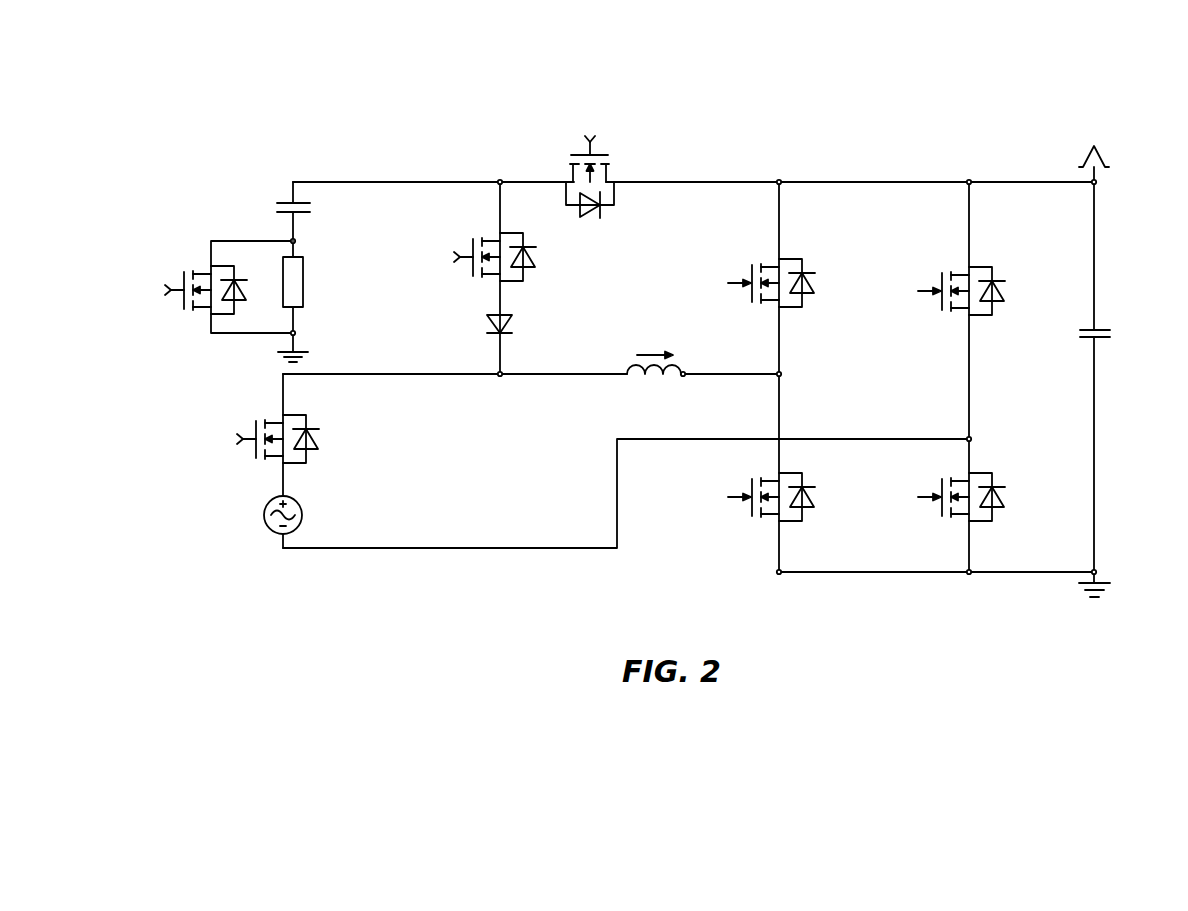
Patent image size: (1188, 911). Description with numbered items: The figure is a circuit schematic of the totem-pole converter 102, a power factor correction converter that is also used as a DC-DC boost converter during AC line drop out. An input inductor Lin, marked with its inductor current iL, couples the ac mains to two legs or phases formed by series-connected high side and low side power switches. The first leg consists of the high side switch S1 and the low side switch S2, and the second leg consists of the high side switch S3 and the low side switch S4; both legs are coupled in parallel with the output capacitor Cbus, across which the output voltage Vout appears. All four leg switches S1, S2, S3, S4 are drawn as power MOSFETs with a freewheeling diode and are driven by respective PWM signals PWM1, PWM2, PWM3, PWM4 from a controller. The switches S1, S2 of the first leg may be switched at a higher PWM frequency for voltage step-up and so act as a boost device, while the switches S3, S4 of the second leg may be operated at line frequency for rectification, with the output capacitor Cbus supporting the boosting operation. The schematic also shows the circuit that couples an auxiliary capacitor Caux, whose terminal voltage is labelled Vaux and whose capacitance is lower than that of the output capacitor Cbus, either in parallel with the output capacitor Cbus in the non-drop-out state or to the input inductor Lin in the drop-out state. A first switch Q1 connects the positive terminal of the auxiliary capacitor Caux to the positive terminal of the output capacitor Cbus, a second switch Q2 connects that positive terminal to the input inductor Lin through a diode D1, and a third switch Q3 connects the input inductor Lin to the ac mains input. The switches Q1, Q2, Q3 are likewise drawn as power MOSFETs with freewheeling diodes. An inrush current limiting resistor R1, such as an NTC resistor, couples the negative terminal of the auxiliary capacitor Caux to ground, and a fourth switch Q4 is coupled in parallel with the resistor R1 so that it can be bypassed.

The totem-pole converter 102 is at (188, 41).
The first switch Q1 is at (601, 177).
The second switch Q2 is at (495, 247).
The third switch Q3 is at (278, 427).
The fourth switch Q4 is at (201, 275).
The high side switch S1 is at (780, 271).
The low side switch S2 is at (780, 486).
The high side switch S3 is at (970, 276).
The low side switch S4 is at (970, 486).
The diode D1 is at (513, 324).
The inrush current limiting resistor R1 is at (307, 282).
The auxiliary capacitor Caux is at (319, 201).
The output capacitor Cbus is at (1119, 328).
The input inductor Lin is at (654, 380).
The inductor current iL is at (655, 346).
The auxiliary voltage Vaux is at (249, 212).
The output voltage Vout is at (1099, 142).
The PWM signal PWM1 is at (708, 285).
The PWM signal PWM2 is at (708, 499).
The PWM signal PWM3 is at (898, 293).
The PWM signal PWM4 is at (898, 499).